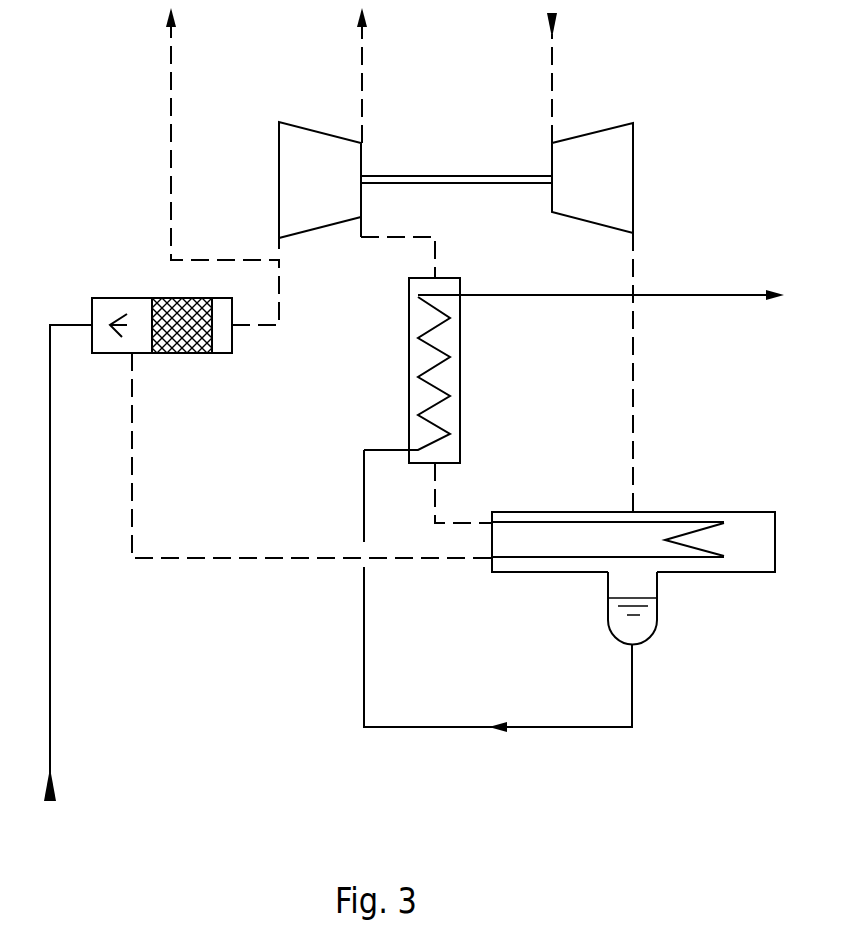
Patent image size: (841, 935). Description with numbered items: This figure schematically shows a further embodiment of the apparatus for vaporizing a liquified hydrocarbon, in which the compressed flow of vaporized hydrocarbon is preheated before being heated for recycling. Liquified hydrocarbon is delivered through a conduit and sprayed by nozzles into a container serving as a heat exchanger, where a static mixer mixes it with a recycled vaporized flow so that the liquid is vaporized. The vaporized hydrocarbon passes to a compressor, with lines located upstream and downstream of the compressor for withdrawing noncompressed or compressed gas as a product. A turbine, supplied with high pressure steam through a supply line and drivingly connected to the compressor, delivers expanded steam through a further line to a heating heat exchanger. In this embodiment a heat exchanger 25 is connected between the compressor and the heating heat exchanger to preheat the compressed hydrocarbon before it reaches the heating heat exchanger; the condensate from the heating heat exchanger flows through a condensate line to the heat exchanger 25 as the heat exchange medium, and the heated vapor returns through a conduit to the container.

The heat exchanger 25 is at (460, 393).